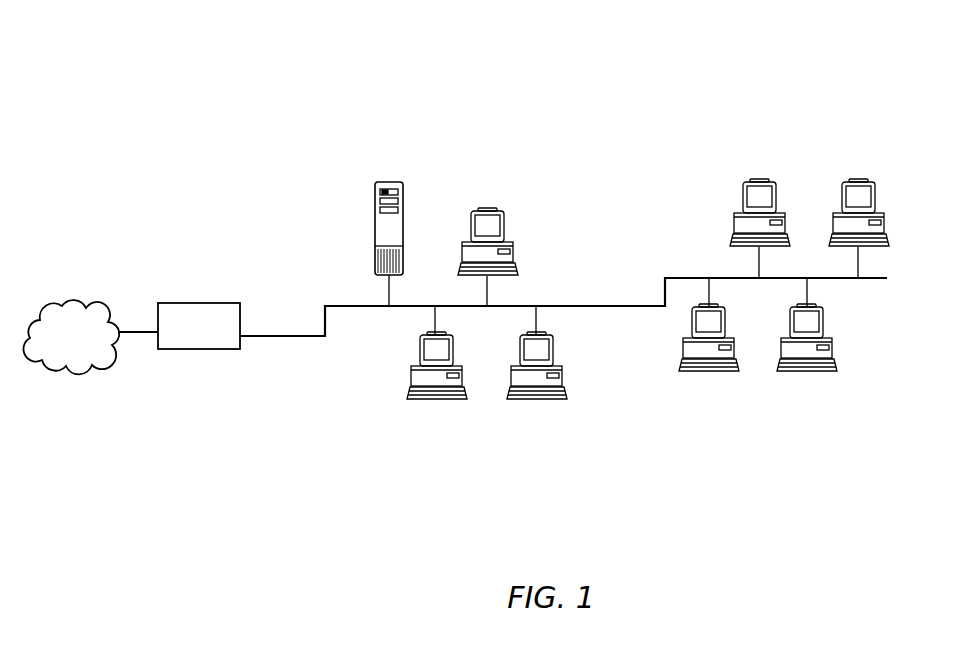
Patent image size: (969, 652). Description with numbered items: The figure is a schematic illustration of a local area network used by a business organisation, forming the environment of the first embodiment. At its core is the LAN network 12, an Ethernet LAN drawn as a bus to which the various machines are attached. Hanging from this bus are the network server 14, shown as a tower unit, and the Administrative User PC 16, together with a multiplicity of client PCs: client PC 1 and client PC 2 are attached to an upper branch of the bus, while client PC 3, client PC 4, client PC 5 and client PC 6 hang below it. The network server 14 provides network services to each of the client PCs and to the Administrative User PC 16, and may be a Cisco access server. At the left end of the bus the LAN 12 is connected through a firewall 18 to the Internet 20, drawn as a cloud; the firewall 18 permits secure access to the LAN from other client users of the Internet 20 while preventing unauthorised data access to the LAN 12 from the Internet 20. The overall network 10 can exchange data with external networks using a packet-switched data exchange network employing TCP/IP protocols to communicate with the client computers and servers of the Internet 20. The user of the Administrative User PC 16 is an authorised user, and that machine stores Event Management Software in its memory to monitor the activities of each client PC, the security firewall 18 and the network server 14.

The network 10 is at (587, 106).
The LAN network 12 is at (626, 303).
The network server 14 is at (382, 226).
The administrative user PC 16 is at (493, 241).
The firewall 18 is at (199, 326).
The Internet 20 is at (90, 337).
The client PC 1 is at (758, 222).
The client PC 2 is at (857, 222).
The client PC 3 is at (434, 377).
The client PC 4 is at (537, 376).
The client PC 5 is at (709, 347).
The client PC 6 is at (806, 347).